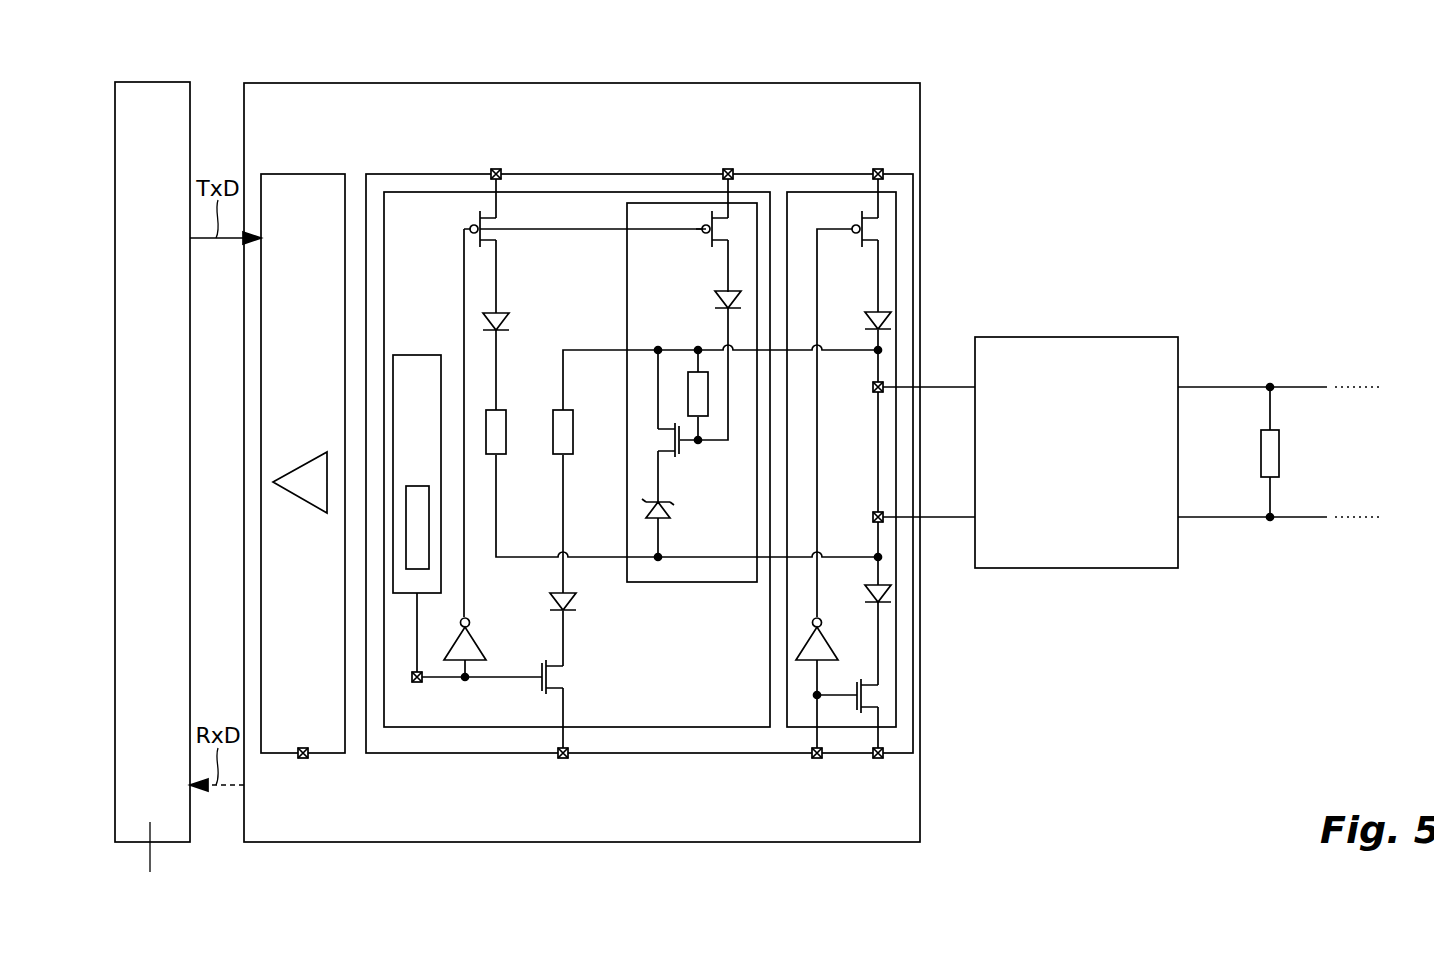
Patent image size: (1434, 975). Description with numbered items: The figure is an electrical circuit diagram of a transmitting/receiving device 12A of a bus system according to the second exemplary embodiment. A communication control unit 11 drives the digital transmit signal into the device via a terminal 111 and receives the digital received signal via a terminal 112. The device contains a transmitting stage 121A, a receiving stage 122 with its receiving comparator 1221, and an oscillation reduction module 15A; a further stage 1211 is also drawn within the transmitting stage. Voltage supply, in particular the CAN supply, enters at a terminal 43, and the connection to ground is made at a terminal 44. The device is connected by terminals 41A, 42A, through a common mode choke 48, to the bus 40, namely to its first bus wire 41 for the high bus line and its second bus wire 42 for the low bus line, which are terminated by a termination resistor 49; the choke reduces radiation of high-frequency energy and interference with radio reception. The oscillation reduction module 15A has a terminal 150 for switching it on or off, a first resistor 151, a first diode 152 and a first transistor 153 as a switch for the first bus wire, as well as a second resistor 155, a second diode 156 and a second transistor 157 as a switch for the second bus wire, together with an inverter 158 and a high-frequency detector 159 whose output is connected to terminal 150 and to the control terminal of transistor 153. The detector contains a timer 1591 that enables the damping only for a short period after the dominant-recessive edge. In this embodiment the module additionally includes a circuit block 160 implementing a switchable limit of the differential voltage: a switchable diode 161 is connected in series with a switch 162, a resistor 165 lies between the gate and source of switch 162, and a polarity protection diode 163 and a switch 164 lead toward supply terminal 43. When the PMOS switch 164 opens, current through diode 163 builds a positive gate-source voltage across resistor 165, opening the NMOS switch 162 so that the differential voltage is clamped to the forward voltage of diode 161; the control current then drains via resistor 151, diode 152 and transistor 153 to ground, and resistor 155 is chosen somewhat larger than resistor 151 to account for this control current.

The communication control unit 11 is at (155, 82).
The transmitting/receiving device 12A is at (385, 83).
The receiving stage 122 is at (303, 174).
The receiving comparator 1221 is at (300, 468).
The terminal 112 is at (303, 760).
The transmitting stage 121A is at (418, 174).
The oscillation reduction module 15A is at (594, 192).
The receiving stage 1211 is at (821, 192).
The terminal 43 is at (496, 169).
The terminal 44 is at (563, 760).
The terminal 111 is at (817, 760).
The terminal 150 is at (412, 677).
The first resistor 151 is at (574, 432).
The first diode 152 is at (553, 600).
The first transistor 153 is at (552, 682).
The second resistor 155 is at (507, 432).
The second diode 156 is at (506, 318).
The second transistor 157 is at (477, 218).
The inverter 158 is at (480, 642).
The high-frequency detector 159 is at (418, 355).
The timer 1591 is at (406, 556).
The circuit block 160 is at (690, 582).
The switchable diode 161 is at (668, 518).
The switch 162 is at (679, 455).
The polarity protection diode 163 is at (716, 298).
The switch 164 is at (706, 233).
The resistor 165 is at (709, 400).
The terminal 41A is at (945, 387).
The terminal 42A is at (945, 517).
The common mode choke 48 is at (1080, 568).
The bus 40 is at (1298, 420).
The first bus wire 41 is at (1296, 387).
The second bus wire 42 is at (1296, 517).
The termination resistor 49 is at (1279, 452).